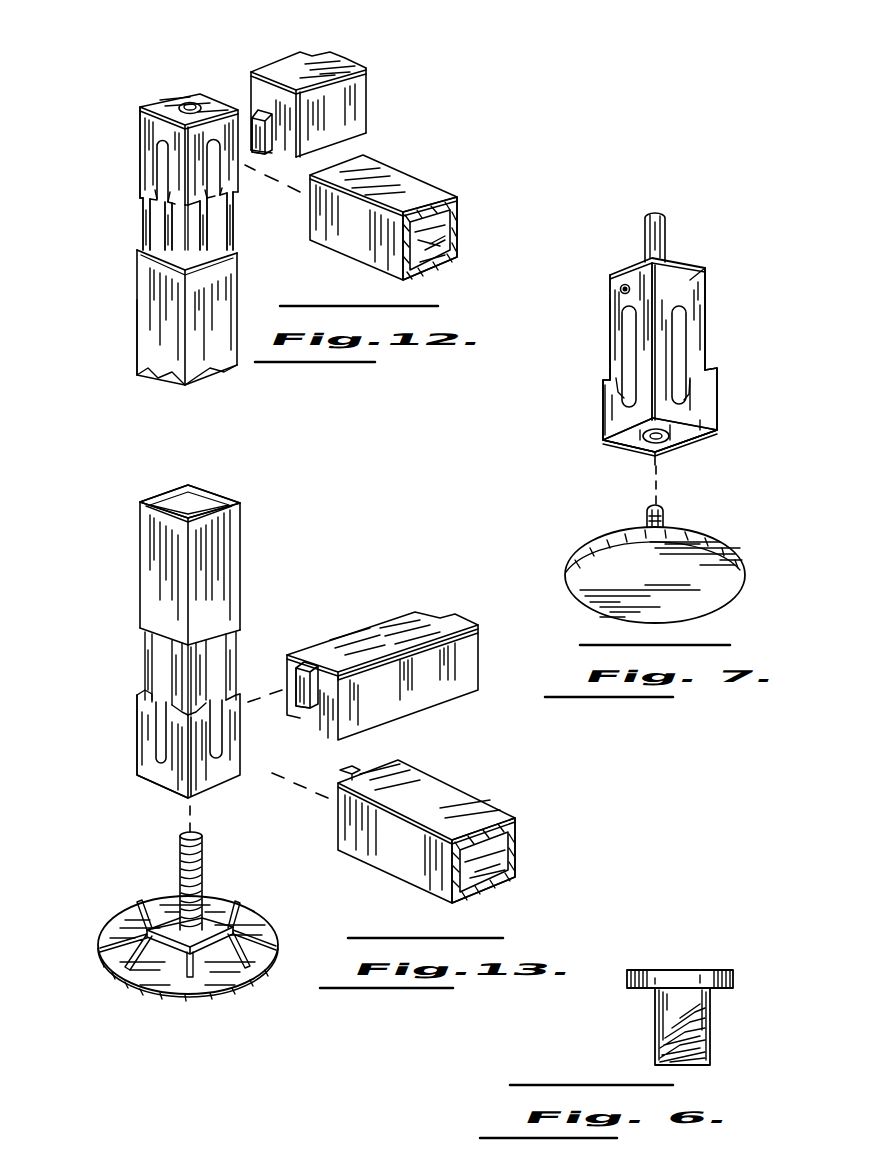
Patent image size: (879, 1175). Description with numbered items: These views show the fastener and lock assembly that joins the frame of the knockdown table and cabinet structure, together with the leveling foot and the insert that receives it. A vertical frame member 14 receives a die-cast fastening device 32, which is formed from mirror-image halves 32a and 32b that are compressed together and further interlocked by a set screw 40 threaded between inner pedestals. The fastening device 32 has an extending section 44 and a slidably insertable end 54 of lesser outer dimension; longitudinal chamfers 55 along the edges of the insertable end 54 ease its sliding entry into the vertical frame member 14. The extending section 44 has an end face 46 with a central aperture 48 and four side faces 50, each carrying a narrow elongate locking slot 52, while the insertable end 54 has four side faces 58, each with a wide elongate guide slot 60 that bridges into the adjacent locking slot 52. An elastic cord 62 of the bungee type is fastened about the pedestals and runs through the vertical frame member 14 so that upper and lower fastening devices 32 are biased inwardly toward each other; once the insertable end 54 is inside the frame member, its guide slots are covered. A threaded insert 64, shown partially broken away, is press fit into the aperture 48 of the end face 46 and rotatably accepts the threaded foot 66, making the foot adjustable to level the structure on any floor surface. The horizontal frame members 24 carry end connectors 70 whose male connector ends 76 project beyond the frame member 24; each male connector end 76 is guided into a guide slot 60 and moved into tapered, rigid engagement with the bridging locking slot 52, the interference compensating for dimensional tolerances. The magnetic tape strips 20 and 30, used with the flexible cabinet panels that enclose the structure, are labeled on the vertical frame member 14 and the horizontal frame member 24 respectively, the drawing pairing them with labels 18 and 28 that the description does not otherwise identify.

In FIG. 12, the vertical frame member 14 is at (138, 292).
In FIG. 13, the vertical frame member 14 is at (148, 556).
In FIG. 6, the vertical frame member 14 is at (705, 966).
In FIG. 12, the leg end 18 is at (150, 342).
In FIG. 13, the leg end 18 is at (155, 497).
In FIG. 12, the magnetic tape strip 20 is at (142, 356).
In FIG. 13, the magnetic tape strip 20 is at (152, 524).
In FIG. 12, the horizontal frame member 24 is at (298, 66).
In FIG. 13, the horizontal frame member 24 is at (372, 642).
In FIG. 12, the rail channel 28 is at (371, 218).
In FIG. 13, the rail channel 28 is at (437, 834).
In FIG. 12, the magnetic tape strip 30 is at (345, 232).
In FIG. 13, the magnetic tape strip 30 is at (405, 870).
In FIG. 12, the fastening device 32 is at (160, 100).
In FIG. 7, the fastening device 32 is at (732, 262).
In FIG. 13, the fastening device 32 is at (148, 780).
In FIG. 7, the mirror-image half 32a is at (703, 300).
In FIG. 7, the mirror-image half 32b is at (612, 302).
In FIG. 7, the set screw 40 is at (624, 282).
In FIG. 12, the extending section 44 is at (135, 126).
In FIG. 13, the extending section 44 is at (150, 732).
In FIG. 7, the end face 46 is at (676, 432).
In FIG. 12, the aperture 48 is at (190, 100).
In FIG. 7, the side face 50 is at (610, 422).
In FIG. 12, the locking slot 52 is at (213, 152).
In FIG. 7, the locking slot 52 is at (630, 390).
In FIG. 13, the locking slot 52 is at (215, 750).
In FIG. 7, the slidably insertable end 54 is at (705, 320).
In FIG. 7, the longitudinal chamfer 55 is at (656, 320).
In FIG. 7, the side face 58 is at (612, 346).
In FIG. 12, the guide slot 60 is at (207, 222).
In FIG. 7, the guide slot 60 is at (632, 328).
In FIG. 13, the guide slot 60 is at (170, 657).
In FIG. 7, the elastic cord 62 is at (655, 240).
In FIG. 7, the threaded insert 64 is at (662, 440).
In FIG. 7, the threaded foot 66 is at (665, 520).
In FIG. 12, the end connector 70 is at (258, 112).
In FIG. 13, the end connector 70 is at (308, 668).
In FIG. 12, the male connector end 76 is at (266, 136).
In FIG. 13, the male connector end 76 is at (310, 692).